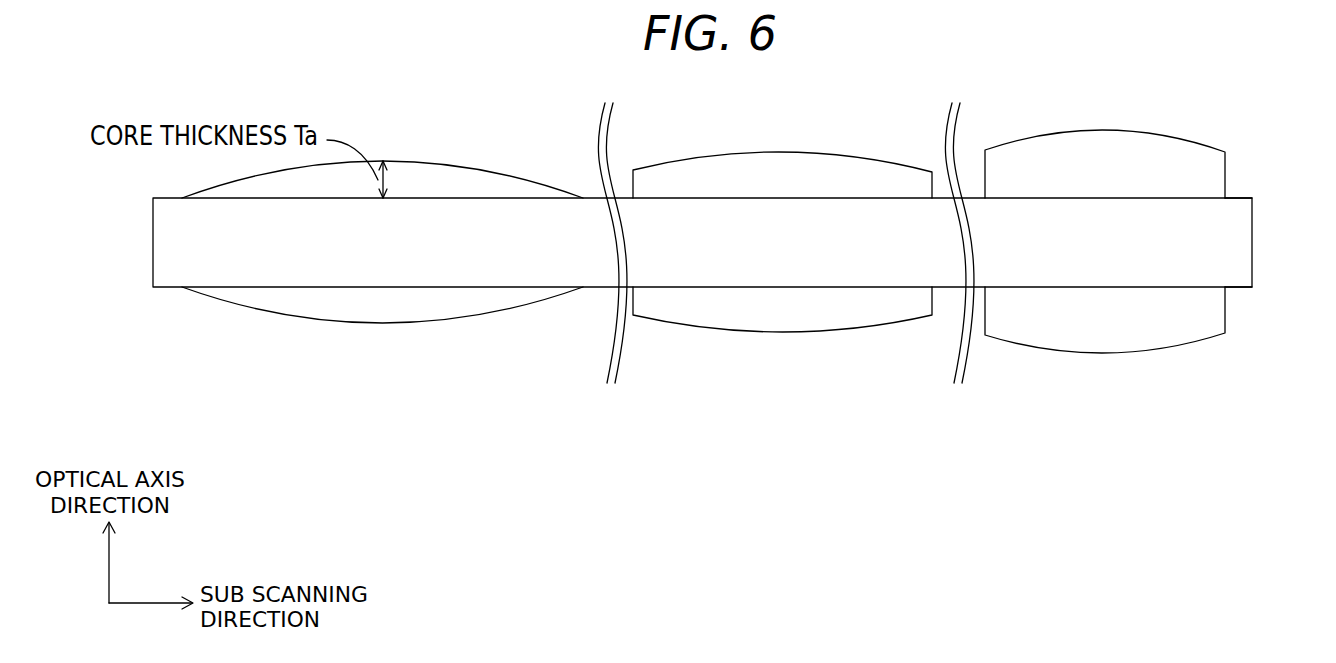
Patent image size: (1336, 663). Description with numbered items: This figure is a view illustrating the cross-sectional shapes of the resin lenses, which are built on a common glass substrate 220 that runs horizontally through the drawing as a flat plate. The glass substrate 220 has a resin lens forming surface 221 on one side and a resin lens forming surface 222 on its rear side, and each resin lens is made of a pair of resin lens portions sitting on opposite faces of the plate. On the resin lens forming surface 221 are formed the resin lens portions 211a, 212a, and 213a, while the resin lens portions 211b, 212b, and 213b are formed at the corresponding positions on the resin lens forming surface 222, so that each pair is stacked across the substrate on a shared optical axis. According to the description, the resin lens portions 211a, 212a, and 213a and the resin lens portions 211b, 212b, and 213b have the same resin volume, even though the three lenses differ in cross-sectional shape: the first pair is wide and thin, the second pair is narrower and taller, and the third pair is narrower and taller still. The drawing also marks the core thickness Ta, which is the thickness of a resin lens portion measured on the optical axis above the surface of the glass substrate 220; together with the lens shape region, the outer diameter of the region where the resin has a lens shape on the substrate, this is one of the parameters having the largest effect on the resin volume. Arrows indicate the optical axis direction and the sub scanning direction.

The resin lens portion 211a is at (385, 323).
The resin lens portion 211b is at (408, 160).
The resin lens portion 212a is at (783, 335).
The resin lens portion 212b is at (783, 150).
The resin lens portion 213a is at (1105, 355).
The resin lens portion 213b is at (1103, 128).
The glass substrate 220 is at (1262, 198).
The resin lens forming surface 221 is at (1236, 289).
The resin lens forming surface 222 is at (1236, 196).